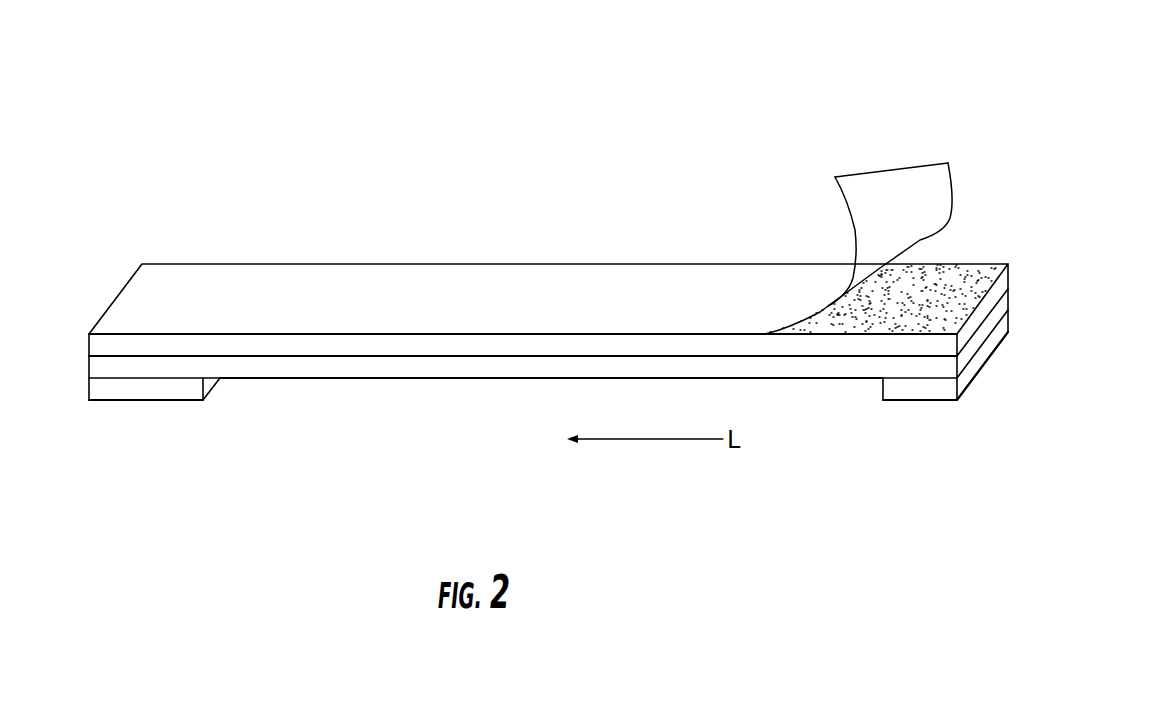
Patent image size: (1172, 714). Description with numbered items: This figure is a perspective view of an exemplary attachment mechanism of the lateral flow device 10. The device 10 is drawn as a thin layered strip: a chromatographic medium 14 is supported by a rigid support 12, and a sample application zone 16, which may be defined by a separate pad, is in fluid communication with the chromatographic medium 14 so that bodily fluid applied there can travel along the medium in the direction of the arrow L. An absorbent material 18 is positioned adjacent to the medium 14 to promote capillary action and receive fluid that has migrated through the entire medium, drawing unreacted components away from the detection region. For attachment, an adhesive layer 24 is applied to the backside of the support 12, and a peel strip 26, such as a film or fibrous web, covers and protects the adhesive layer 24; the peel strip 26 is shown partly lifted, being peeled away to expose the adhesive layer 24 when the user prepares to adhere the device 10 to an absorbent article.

The lateral flow assay device 10 is at (168, 163).
The rigid support 12 is at (1012, 268).
The chromatographic medium 14 is at (1010, 302).
The sample application zone 16 is at (1012, 328).
The absorbent material 18 is at (137, 389).
The adhesive layer 24 is at (971, 278).
The peel strip 26 is at (912, 185).